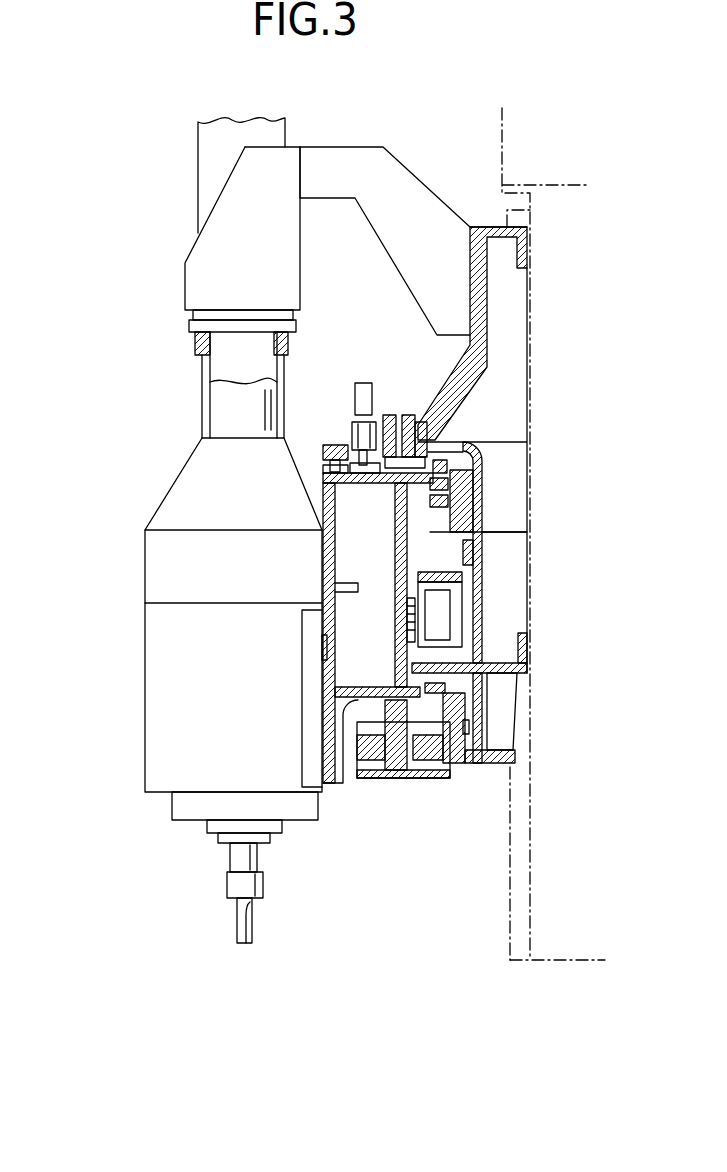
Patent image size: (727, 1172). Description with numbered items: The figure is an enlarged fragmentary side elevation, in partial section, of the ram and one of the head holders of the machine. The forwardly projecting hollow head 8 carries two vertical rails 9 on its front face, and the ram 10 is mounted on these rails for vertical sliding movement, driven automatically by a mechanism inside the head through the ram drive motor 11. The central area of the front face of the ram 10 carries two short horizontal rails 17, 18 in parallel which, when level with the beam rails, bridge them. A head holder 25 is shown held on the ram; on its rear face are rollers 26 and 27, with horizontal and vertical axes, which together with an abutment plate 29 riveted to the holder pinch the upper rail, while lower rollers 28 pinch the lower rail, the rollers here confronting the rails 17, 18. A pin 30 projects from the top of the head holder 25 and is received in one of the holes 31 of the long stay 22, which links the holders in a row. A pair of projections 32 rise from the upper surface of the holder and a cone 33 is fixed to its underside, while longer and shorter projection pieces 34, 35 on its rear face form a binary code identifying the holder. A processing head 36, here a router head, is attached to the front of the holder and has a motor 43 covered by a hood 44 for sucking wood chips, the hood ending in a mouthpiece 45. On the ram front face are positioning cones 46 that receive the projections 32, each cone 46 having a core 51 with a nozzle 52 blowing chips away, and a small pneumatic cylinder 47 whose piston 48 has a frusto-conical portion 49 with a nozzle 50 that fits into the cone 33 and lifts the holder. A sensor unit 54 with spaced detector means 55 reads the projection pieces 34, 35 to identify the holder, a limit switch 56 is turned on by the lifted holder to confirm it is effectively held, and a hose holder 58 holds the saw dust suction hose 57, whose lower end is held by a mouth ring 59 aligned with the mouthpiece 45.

The head 8 is at (583, 962).
The vertical rails 9 is at (510, 905).
The ram 10 is at (483, 623).
The ram drive motor 11 is at (500, 153).
The short horizontal rail 17 is at (432, 547).
The short horizontal rail 18 is at (433, 677).
The stay 22 is at (323, 460).
The head holder 25 is at (360, 690).
The roller 26 is at (432, 490).
The roller 27 is at (445, 506).
The roller 28 is at (423, 653).
The abutment plate 29 is at (433, 693).
The pin 30 is at (328, 465).
The hole 31 is at (334, 444).
The projection 32 is at (432, 466).
The cone 33 is at (467, 697).
The longer projection piece 34 is at (320, 603).
The shorter projection piece 35 is at (405, 608).
The processing head 36 is at (145, 546).
The motor 43 is at (200, 805).
The hood 44 is at (175, 632).
The mouthpiece 45 is at (187, 329).
The positioning cone 46 is at (430, 421).
The pneumatic cylinder 47 is at (355, 740).
The piston 48 is at (428, 775).
The frusto-conical portion 49 is at (462, 765).
The nozzle 50 is at (410, 778).
The core 51 is at (470, 443).
The nozzle 52 is at (395, 418).
The sensor unit 54 is at (432, 610).
The detector means 55 is at (440, 662).
The limit switch 56 is at (355, 392).
The saw dust suction hose 57 is at (212, 168).
The hose holder 58 is at (215, 253).
The mouth ring 59 is at (220, 312).